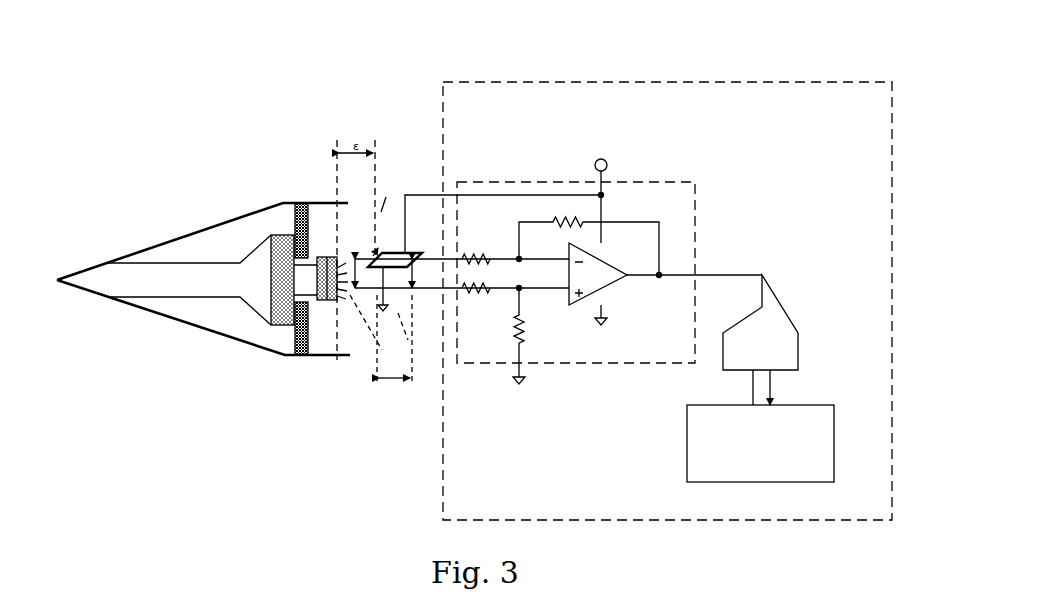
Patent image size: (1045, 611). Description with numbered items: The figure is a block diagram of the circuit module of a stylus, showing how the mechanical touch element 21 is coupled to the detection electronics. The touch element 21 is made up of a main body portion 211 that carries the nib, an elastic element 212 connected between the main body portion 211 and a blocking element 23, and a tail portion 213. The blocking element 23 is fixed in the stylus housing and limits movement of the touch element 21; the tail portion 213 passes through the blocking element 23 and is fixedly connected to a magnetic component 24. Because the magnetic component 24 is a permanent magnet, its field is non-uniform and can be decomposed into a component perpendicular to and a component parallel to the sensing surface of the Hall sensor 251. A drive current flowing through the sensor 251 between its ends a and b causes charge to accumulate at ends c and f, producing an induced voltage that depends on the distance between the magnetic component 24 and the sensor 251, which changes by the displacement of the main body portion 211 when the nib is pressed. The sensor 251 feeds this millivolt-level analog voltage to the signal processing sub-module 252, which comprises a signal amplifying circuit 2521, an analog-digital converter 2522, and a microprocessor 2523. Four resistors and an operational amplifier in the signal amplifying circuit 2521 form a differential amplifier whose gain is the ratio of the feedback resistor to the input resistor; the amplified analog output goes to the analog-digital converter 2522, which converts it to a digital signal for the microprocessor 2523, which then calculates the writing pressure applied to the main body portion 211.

The touch element 21 is at (180, 402).
The main body portion 211 is at (173, 277).
The elastic element 212 is at (272, 325).
The tail portion 213 is at (312, 273).
The blocking element 23 is at (300, 203).
The magnetic component 24 is at (323, 300).
The sensor 251 is at (417, 252).
The signal processing sub-module 252 is at (808, 82).
The signal amplifying circuit 2521 is at (697, 182).
The analog-digital converter 2522 is at (775, 313).
The microprocessor 2523 is at (830, 405).